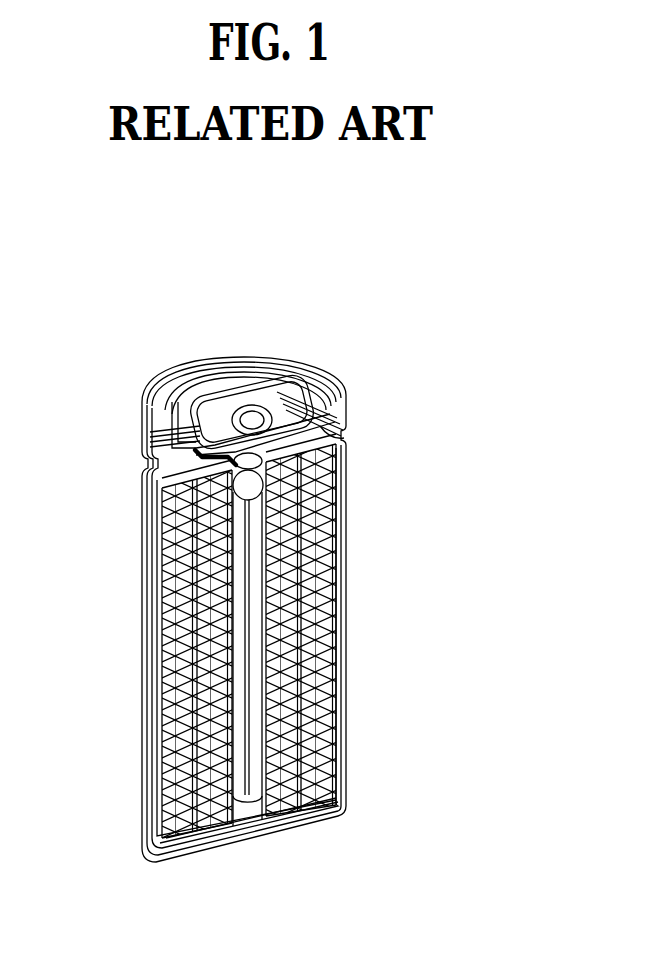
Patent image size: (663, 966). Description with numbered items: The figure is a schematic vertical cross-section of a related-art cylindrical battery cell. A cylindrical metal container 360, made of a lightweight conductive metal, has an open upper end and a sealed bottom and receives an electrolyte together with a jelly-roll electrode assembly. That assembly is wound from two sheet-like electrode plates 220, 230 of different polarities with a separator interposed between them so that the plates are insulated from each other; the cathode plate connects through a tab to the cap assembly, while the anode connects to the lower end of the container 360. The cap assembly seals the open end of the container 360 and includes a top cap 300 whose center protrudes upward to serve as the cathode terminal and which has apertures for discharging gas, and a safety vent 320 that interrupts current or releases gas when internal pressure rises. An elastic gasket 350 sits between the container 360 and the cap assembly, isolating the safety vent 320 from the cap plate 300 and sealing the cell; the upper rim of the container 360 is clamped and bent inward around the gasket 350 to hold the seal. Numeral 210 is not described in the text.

The electrode assembly 210 is at (183, 657).
The electrode plate 220 is at (313, 733).
The electrode plate 230 is at (350, 817).
The top cap 300 is at (245, 386).
The safety vent 320 is at (312, 428).
The gasket 350 is at (318, 392).
The cylindrical metal container 360 is at (347, 587).